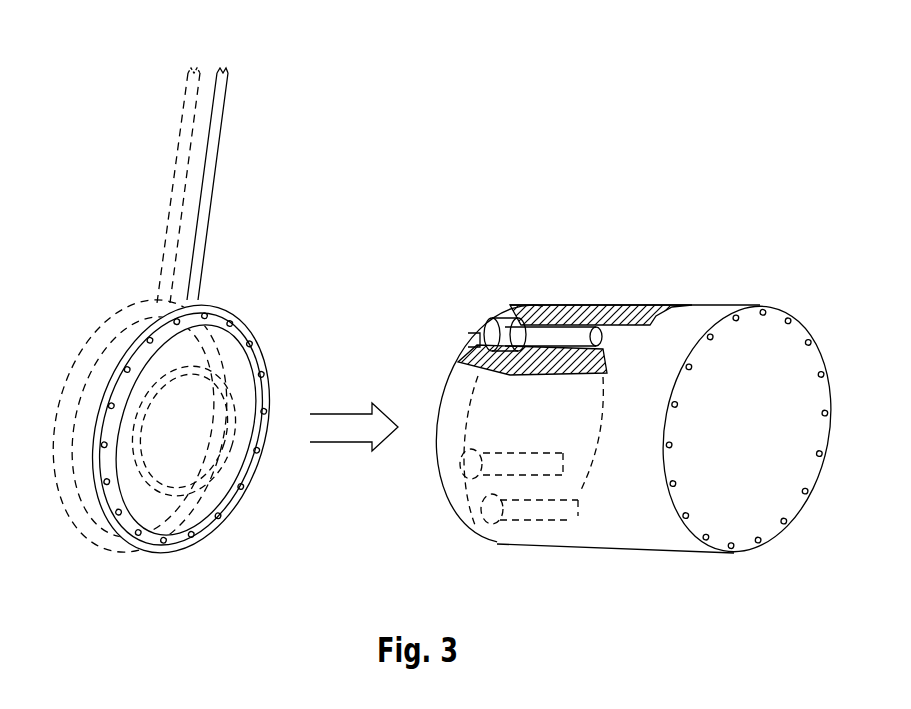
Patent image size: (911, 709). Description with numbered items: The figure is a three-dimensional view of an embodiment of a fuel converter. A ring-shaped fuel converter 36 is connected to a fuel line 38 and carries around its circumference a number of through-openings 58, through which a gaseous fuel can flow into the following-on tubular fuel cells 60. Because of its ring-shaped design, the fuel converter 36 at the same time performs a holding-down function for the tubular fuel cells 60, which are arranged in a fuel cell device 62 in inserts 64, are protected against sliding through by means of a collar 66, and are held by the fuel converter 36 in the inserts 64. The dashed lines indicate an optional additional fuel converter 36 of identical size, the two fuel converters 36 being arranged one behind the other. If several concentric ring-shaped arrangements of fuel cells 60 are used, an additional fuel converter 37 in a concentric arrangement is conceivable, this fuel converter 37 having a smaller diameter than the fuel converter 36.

The fuel converter 36 is at (97, 337).
The additional fuel converter 37 is at (162, 487).
The fuel line 38 is at (182, 133).
The through-openings 58 is at (272, 377).
The tubular fuel cells 60 is at (565, 330).
The fuel cell device 62 is at (713, 295).
The inserts 64 is at (478, 340).
The collar 66 is at (513, 306).